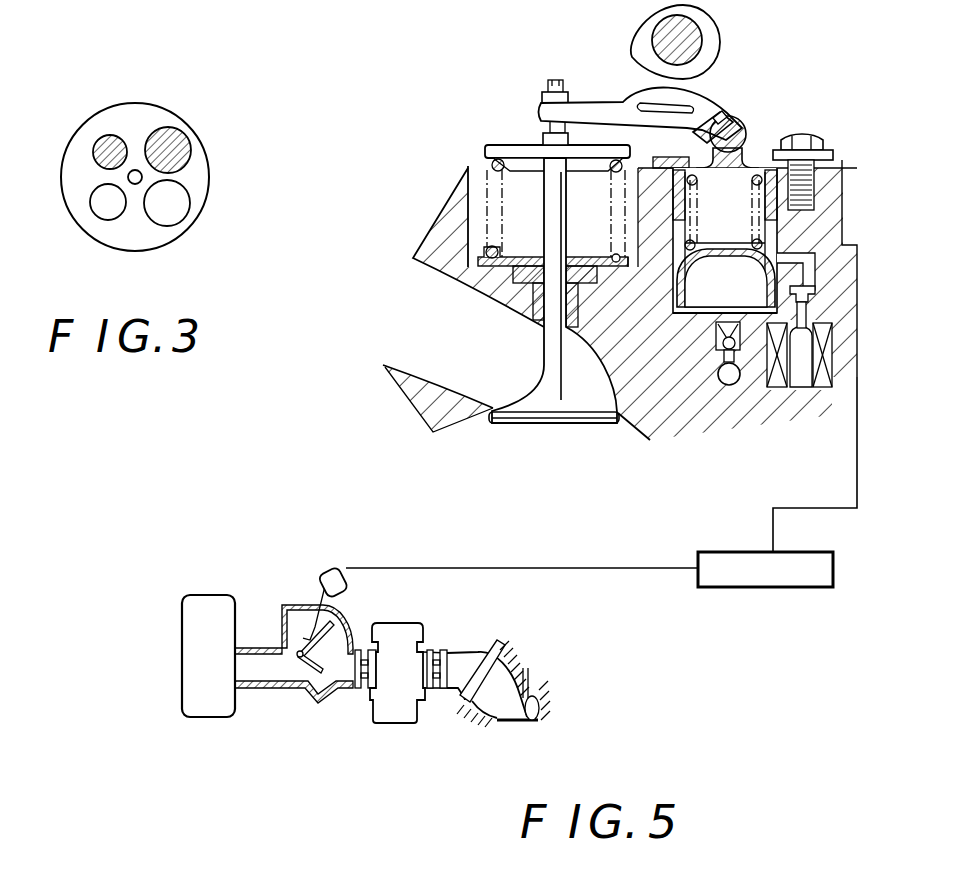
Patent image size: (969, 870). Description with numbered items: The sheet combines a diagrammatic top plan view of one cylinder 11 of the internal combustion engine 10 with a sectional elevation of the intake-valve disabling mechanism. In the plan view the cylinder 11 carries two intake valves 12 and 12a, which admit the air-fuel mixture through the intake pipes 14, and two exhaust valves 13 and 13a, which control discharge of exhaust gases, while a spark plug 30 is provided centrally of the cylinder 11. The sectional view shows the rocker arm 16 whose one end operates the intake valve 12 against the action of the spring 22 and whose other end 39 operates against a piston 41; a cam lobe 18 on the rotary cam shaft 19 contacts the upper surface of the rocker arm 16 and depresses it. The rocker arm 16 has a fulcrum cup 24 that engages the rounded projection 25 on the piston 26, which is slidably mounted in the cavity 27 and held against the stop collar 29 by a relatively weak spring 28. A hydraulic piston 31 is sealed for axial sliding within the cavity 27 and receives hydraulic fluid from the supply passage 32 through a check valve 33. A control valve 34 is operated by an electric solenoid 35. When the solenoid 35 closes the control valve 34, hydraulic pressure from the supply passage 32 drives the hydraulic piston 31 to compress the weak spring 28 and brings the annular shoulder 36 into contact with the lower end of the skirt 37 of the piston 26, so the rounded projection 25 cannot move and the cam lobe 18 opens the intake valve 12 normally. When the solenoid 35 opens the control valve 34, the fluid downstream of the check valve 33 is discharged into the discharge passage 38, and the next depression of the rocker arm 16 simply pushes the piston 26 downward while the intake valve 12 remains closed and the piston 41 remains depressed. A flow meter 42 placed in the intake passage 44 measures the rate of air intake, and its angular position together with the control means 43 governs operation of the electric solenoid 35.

In FIG. 5, the internal combustion engine 10 is at (448, 178).
In FIG. 3, the cylinder 11 is at (137, 103).
In FIG. 3, the intake valve 12 is at (178, 140).
In FIG. 5, the intake valve 12 is at (545, 418).
In FIG. 3, the intake valve 12a is at (178, 210).
In FIG. 3, the exhaust valve 13 is at (96, 148).
In FIG. 3, the exhaust valve 13a is at (102, 208).
In FIG. 5, the intake pipe 14 is at (458, 333).
In FIG. 5, the rocker arm 16 is at (593, 100).
In FIG. 5, the cam lobe 18 is at (641, 33).
In FIG. 5, the rotary cam shaft 19 is at (692, 40).
In FIG. 5, the spring 22 is at (488, 252).
In FIG. 5, the fulcrum cup 24 is at (742, 130).
In FIG. 5, the rounded projection 25 is at (747, 150).
In FIG. 5, the piston 26 is at (752, 168).
In FIG. 5, the cavity 27 is at (768, 240).
In FIG. 5, the weak spring 28 is at (765, 250).
In FIG. 5, the stop collar 29 is at (835, 160).
In FIG. 3, the spark plug 30 is at (135, 184).
In FIG. 5, the hydraulic piston 31 is at (688, 292).
In FIG. 5, the supply passage 32 is at (733, 386).
In FIG. 5, the check valve 33 is at (723, 344).
In FIG. 5, the control valve 34 is at (807, 307).
In FIG. 5, the electric solenoid 35 is at (803, 363).
In FIG. 5, the annular shoulder 36 is at (781, 258).
In FIG. 5, the skirt 37 is at (765, 222).
In FIG. 5, the discharge passage 38 is at (812, 292).
In FIG. 5, the other end of rocker arm 39 is at (721, 117).
In FIG. 5, the piston 41 is at (776, 195).
In FIG. 5, the flow meter 42 is at (317, 672).
In FIG. 5, the control means 43 is at (758, 590).
In FIG. 5, the intake passage 44 is at (288, 667).